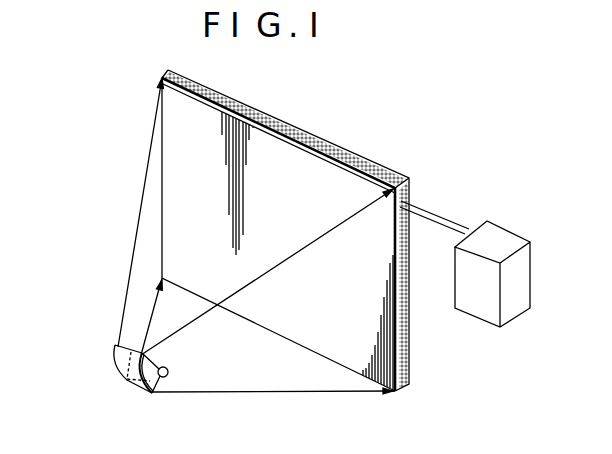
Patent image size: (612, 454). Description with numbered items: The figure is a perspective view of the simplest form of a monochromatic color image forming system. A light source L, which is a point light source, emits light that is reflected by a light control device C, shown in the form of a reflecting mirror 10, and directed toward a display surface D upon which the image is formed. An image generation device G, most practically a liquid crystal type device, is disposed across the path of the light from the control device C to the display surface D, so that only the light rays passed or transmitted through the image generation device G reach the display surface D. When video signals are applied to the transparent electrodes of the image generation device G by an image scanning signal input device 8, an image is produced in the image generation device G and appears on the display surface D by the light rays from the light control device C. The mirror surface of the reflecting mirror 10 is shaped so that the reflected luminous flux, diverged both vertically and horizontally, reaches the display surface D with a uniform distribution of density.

The image generation device G is at (244, 113).
The display surface D is at (344, 143).
The image scanning signal input device 8 is at (512, 308).
The light control device C is at (116, 366).
The light source L is at (168, 372).
The reflecting mirror 10 is at (137, 388).